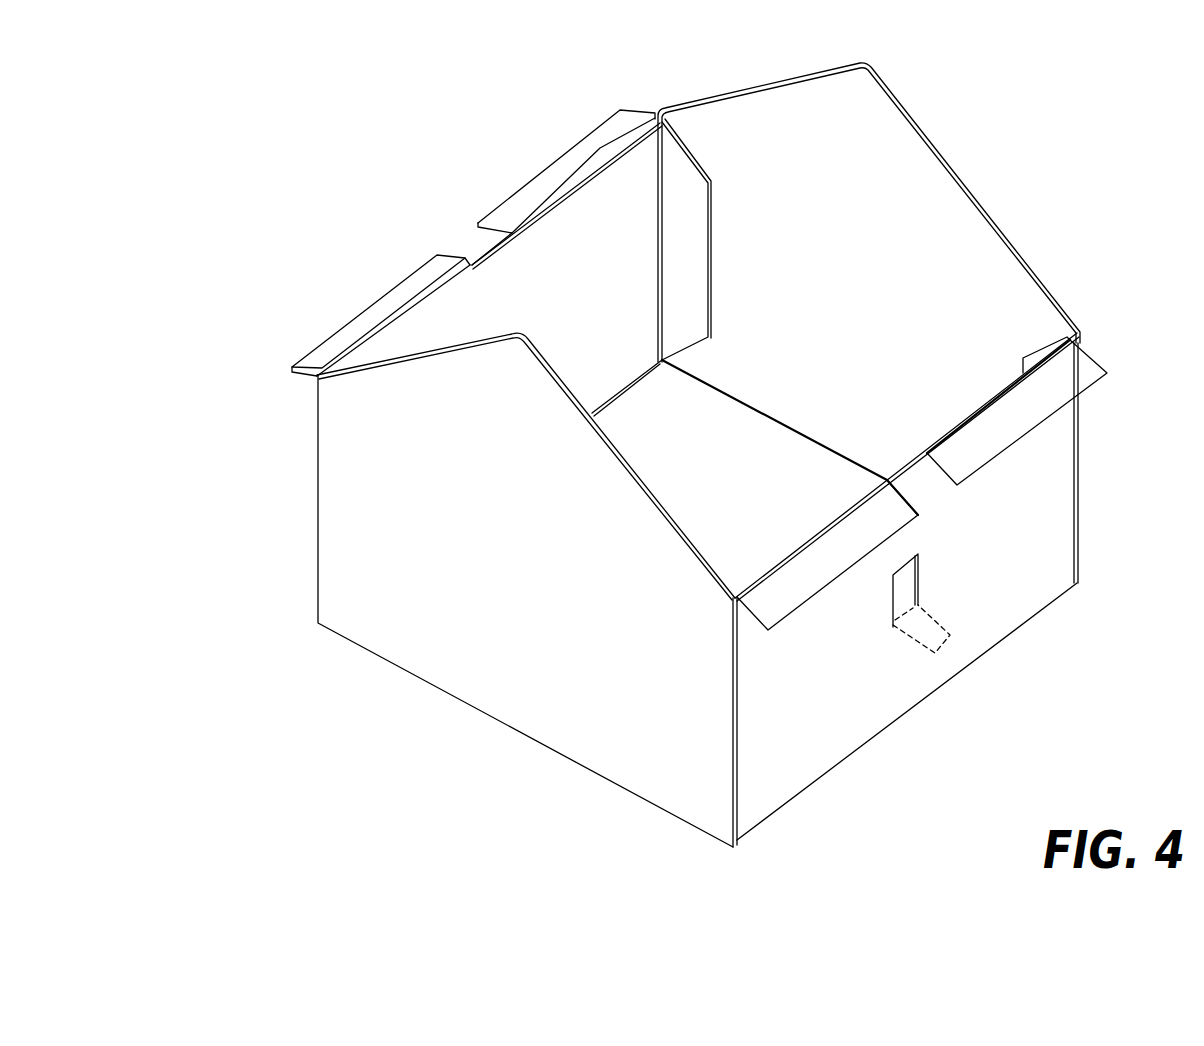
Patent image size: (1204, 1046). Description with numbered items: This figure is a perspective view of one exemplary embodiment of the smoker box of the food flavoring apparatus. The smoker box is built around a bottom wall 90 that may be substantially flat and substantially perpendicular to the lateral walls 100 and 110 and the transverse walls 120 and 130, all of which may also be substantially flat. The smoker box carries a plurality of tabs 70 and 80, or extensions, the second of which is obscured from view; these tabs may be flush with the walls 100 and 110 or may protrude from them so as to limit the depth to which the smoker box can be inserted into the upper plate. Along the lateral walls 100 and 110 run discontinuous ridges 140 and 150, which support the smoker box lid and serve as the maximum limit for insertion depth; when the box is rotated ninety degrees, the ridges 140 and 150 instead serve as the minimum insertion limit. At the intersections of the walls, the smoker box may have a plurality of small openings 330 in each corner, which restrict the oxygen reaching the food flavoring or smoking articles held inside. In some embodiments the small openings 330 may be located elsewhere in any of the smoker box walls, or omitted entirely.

The tab 70 is at (935, 637).
The tab 80 is at (393, 250).
The bottom wall 90 is at (768, 450).
The lateral wall 100 is at (550, 283).
The lateral wall 110 is at (820, 733).
The transverse wall 120 is at (483, 677).
The transverse wall 130 is at (965, 267).
The discontinuous ridge 140 is at (360, 328).
The discontinuous ridge 150 is at (1020, 420).
The small openings 330 is at (670, 363).